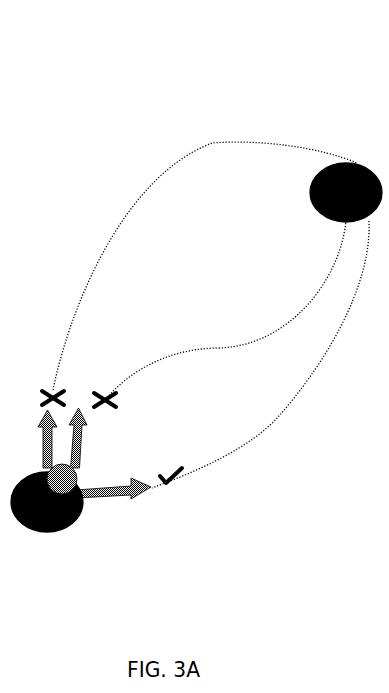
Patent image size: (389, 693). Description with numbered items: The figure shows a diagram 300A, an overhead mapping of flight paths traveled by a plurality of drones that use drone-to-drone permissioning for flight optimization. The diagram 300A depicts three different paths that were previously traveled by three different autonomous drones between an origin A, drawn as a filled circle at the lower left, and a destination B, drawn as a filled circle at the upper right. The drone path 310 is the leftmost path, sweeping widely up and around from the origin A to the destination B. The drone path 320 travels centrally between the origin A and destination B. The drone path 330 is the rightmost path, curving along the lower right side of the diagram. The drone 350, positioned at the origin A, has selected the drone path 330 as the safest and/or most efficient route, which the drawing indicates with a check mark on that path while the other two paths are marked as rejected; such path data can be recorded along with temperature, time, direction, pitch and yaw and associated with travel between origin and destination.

The diagram 300A is at (186, 34).
The drone path 310 is at (213, 142).
The drone path 320 is at (188, 348).
The drone path 330 is at (278, 417).
The drone 350 is at (78, 495).